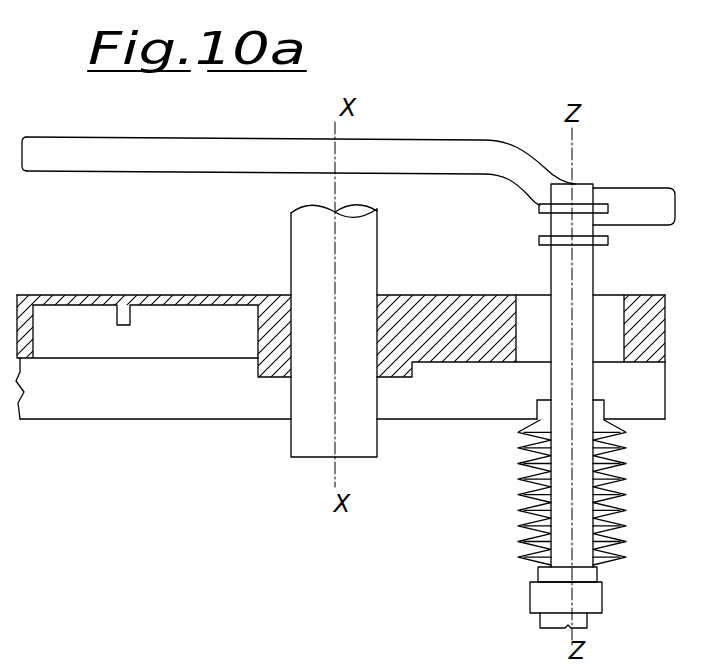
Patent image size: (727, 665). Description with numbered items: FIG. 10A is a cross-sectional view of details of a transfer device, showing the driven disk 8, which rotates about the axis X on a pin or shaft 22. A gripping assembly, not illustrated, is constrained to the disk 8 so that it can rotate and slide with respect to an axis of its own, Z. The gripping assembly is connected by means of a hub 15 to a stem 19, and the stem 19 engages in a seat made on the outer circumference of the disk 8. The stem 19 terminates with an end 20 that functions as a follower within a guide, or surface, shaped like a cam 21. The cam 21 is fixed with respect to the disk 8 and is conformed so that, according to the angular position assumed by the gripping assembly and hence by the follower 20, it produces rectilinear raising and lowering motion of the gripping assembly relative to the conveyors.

The driven disk 8 is at (186, 294).
The hub 15 is at (538, 593).
The stem 19 is at (587, 280).
The end 20 is at (586, 222).
The cam 21 is at (87, 173).
The pin or shaft 22 is at (293, 436).